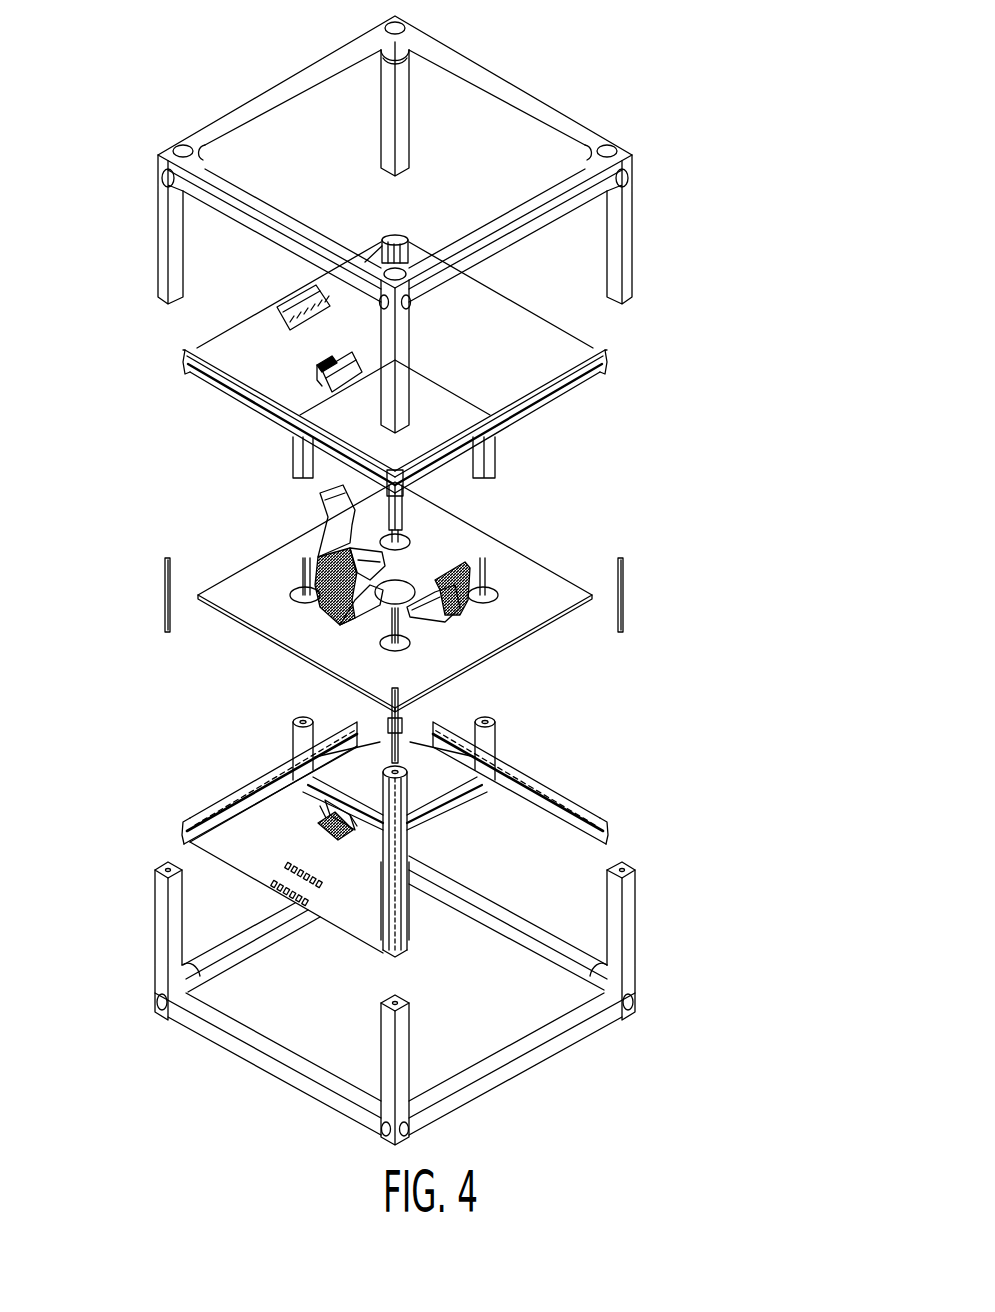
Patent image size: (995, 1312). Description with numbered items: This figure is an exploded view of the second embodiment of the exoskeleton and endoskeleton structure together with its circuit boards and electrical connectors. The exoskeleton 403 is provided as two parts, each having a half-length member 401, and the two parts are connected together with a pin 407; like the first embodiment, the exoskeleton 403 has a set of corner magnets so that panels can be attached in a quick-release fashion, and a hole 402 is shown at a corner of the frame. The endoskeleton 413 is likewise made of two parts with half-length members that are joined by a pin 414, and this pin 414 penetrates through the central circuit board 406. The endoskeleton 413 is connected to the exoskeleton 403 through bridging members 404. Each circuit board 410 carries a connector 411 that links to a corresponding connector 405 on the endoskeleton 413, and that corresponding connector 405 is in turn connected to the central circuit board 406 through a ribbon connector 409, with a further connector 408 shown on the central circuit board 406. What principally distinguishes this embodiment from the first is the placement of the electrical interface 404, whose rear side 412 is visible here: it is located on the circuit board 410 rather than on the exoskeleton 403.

The half-length member 401 is at (637, 277).
The mounting hole 402 is at (628, 177).
The exoskeleton 403 is at (567, 112).
The bridging member 404 is at (298, 300).
The corresponding connector 405 is at (333, 373).
The central circuit board 406 is at (560, 583).
The pin 407 is at (630, 580).
The connector with ribbon cable 408 is at (452, 543).
The ribbon connector 409 is at (455, 614).
The circuit board 410 is at (355, 918).
The connector 411 is at (323, 815).
The rear side 412 is at (290, 867).
The endoskeleton 413 is at (455, 790).
The pin 414 is at (400, 693).